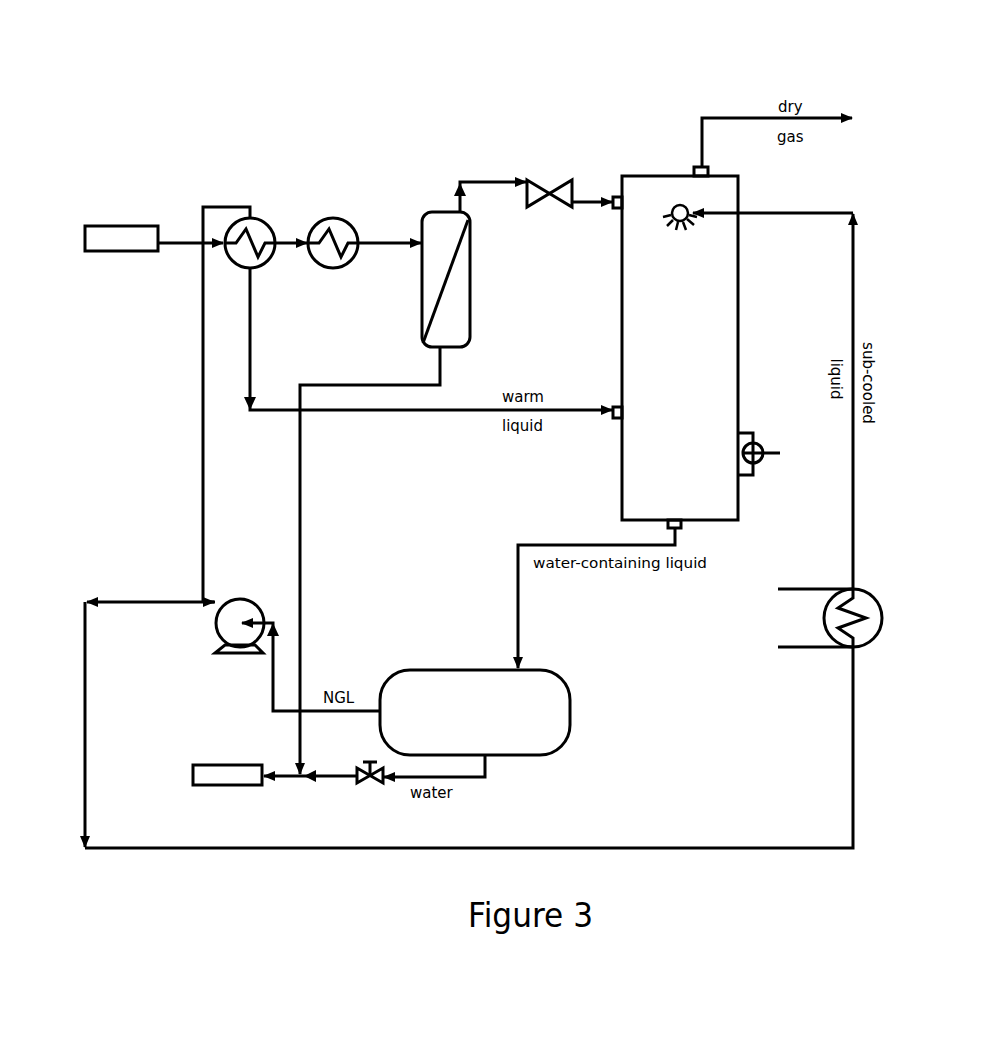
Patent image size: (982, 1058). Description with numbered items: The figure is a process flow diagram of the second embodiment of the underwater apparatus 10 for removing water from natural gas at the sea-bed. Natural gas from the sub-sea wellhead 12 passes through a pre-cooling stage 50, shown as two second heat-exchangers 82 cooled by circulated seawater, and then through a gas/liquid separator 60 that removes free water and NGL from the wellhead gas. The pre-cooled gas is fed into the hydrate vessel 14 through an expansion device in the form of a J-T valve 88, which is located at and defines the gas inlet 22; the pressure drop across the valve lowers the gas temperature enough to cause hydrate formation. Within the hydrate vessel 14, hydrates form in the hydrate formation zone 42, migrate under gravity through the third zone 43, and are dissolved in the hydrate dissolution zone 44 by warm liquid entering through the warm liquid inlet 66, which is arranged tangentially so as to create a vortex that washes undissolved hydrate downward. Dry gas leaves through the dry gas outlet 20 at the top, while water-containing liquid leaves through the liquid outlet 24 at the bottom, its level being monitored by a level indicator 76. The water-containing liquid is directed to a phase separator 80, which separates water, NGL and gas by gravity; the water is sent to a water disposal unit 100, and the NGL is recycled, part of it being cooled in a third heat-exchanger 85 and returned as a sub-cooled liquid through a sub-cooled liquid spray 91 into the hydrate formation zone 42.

The apparatus 10 is at (812, 75).
The sub-sea wellhead 12 is at (112, 253).
The hydrate vessel 14 is at (739, 377).
The dry gas outlet 20 is at (710, 172).
The gas inlet 22 is at (612, 212).
The liquid outlet 24 is at (685, 525).
The hydrate formation zone 42 is at (688, 245).
The third zone 43 is at (688, 333).
The hydrate dissolution zone 44 is at (688, 413).
The pre-cooling stage 50 is at (305, 178).
The gas/liquid separator 60 is at (472, 282).
The warm liquid inlet 66 is at (610, 422).
The level indicator 76 is at (775, 457).
The phase separator 80 is at (572, 712).
The second heat-exchanger 82 is at (267, 265).
The third heat-exchanger 85 is at (882, 608).
The J-T valve 88 is at (540, 183).
The sub-cooled liquid spray 91 is at (675, 205).
The water disposal unit 100 is at (226, 763).